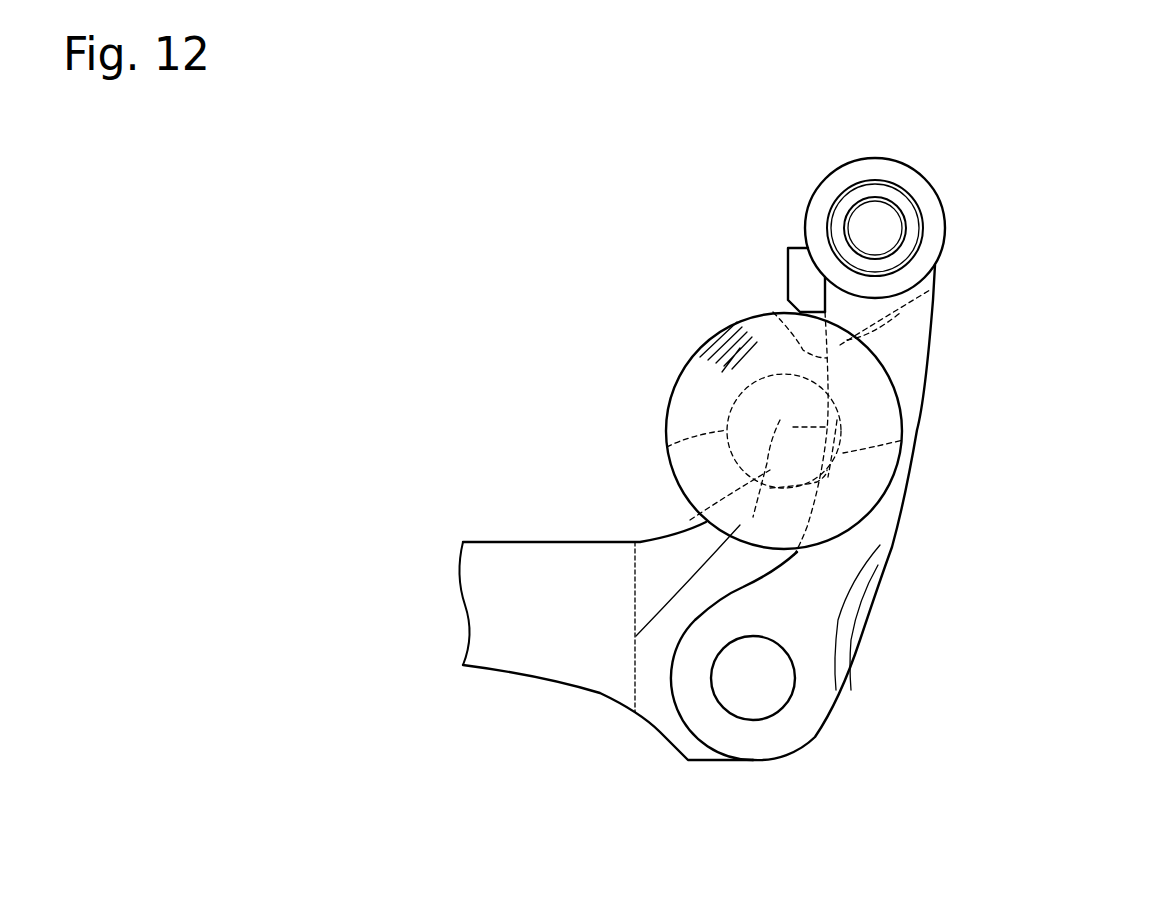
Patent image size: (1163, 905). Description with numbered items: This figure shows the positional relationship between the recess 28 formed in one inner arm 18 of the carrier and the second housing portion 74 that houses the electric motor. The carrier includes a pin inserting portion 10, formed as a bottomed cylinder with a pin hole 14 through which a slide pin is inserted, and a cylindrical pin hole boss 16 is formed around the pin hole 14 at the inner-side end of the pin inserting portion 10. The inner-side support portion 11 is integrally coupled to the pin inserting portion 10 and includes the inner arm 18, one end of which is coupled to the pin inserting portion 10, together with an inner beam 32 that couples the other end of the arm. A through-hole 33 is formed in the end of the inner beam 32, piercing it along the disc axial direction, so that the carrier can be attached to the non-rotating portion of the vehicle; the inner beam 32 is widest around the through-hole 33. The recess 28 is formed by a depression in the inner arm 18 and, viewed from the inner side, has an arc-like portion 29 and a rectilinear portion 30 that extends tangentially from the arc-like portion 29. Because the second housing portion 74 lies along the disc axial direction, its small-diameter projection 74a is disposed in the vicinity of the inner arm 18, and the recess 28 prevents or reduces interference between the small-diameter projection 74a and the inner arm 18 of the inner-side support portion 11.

The pin inserting portion 10 is at (915, 173).
The inner-side support portion 11 is at (1032, 311).
The pin hole 14 is at (885, 227).
The pin hole boss 16 is at (832, 192).
The inner arm 18 is at (913, 360).
The recess 28 is at (775, 315).
The arc-like portion 29 is at (920, 425).
The rectilinear portion 30 is at (900, 313).
The inner beam 32 is at (510, 652).
The through-hole 33 is at (765, 698).
The second housing portion 74 is at (897, 477).
The small-diameter projection 74a is at (667, 447).